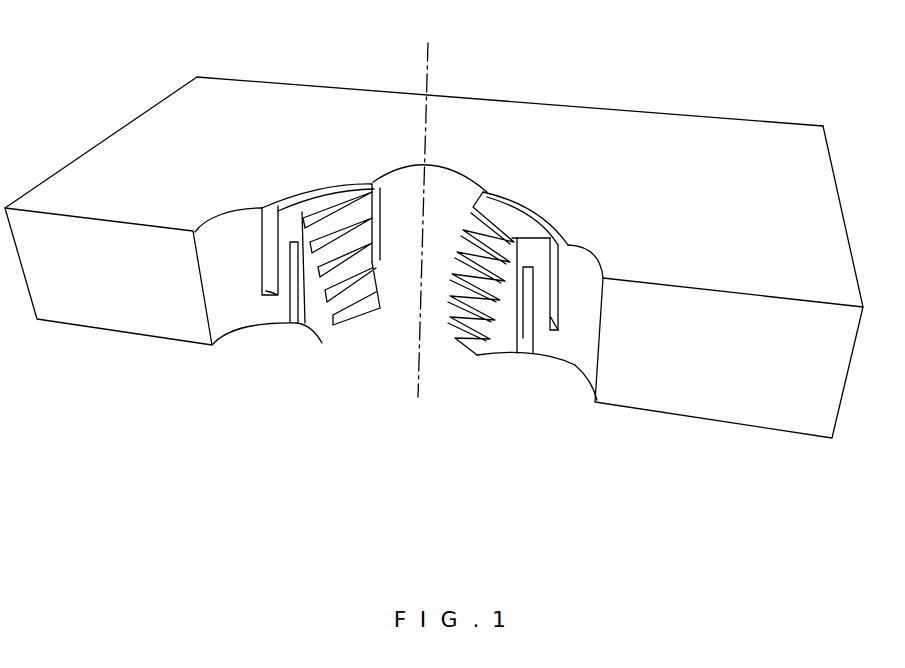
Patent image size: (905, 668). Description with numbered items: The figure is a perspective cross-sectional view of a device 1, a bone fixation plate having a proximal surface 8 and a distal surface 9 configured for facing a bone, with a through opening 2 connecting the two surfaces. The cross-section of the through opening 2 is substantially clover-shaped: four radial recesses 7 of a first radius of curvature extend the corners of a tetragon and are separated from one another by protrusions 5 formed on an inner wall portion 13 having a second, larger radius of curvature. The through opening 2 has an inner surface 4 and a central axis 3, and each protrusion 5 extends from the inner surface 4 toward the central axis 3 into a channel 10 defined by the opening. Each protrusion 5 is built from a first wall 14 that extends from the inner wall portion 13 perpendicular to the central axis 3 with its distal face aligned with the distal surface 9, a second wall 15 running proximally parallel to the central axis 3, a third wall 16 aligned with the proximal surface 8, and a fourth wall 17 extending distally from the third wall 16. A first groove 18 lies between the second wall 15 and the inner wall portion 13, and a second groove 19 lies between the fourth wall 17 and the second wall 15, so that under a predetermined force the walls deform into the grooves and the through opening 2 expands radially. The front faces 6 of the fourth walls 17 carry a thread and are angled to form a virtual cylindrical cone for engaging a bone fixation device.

The device 1 is at (156, 90).
The through opening 2 is at (415, 192).
The central axis 3 is at (430, 63).
The inner surface 4 is at (228, 303).
The protrusions 5 is at (309, 313).
The front faces 6 is at (352, 297).
The radial recesses 7 is at (440, 168).
The proximal surface 8 is at (688, 133).
The distal surface 9 is at (762, 427).
The channel 10 is at (397, 215).
The inner wall portion 13 is at (270, 205).
The first wall 14 is at (558, 352).
The second wall 15 is at (540, 285).
The third wall 16 is at (523, 252).
The fourth wall 17 is at (511, 350).
The first groove 18 is at (553, 275).
The second groove 19 is at (525, 320).